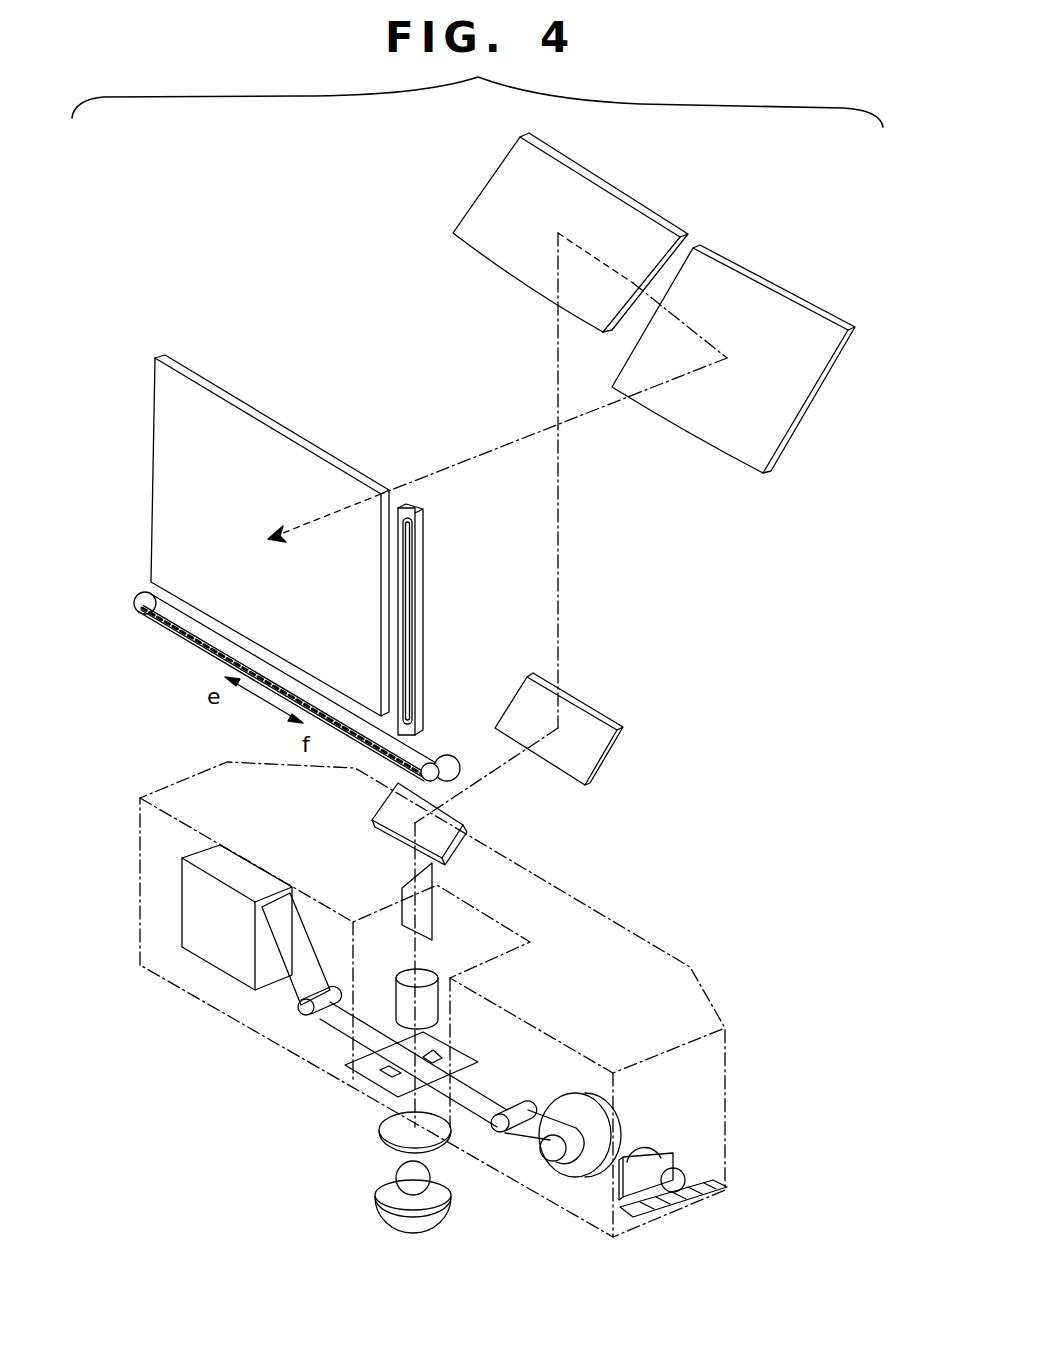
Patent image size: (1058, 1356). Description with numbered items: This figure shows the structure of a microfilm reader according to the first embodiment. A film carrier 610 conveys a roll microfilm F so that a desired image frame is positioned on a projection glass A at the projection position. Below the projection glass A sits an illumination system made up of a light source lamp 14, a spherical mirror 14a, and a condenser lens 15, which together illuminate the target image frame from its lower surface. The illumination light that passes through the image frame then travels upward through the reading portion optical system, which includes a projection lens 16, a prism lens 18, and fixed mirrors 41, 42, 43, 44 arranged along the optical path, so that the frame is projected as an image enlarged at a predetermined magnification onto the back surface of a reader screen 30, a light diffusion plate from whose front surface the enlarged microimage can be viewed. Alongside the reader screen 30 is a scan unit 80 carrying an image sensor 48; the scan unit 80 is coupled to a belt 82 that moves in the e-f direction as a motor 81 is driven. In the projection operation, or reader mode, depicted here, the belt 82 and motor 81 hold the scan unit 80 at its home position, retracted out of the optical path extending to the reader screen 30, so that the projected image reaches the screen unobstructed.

The fixed mirror 43 is at (590, 200).
The fixed mirror 44 is at (755, 308).
The reader screen 30 is at (161, 498).
The scan unit 80 is at (449, 619).
The image sensor 48 is at (408, 630).
The motor 81 is at (448, 753).
The belt 82 is at (167, 627).
The fixed mirror 42 is at (580, 726).
The fixed mirror 41 is at (448, 822).
The film carrier 610 is at (537, 1197).
The roll microfilm F is at (327, 1022).
The projection glass A is at (373, 1070).
The prism lens 18 is at (425, 905).
The projection lens 16 is at (428, 978).
The condenser lens 15 is at (395, 1133).
The light source lamp 14 is at (410, 1180).
The spherical mirror 14a is at (412, 1220).